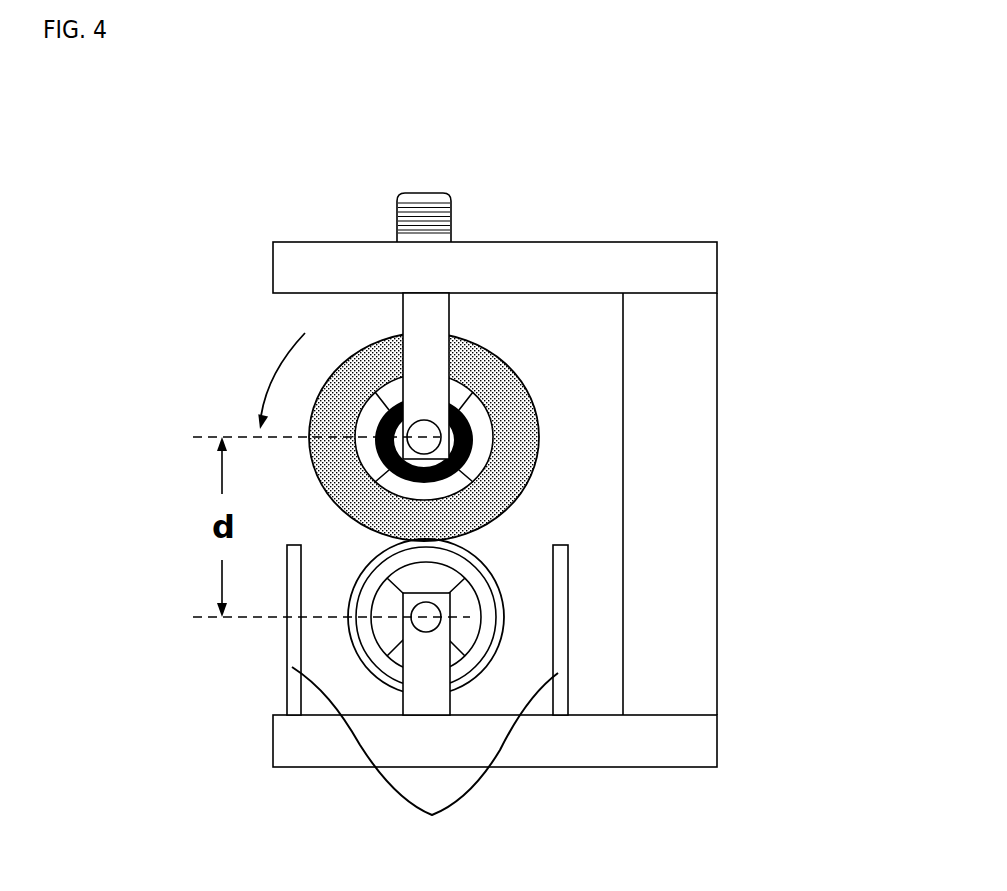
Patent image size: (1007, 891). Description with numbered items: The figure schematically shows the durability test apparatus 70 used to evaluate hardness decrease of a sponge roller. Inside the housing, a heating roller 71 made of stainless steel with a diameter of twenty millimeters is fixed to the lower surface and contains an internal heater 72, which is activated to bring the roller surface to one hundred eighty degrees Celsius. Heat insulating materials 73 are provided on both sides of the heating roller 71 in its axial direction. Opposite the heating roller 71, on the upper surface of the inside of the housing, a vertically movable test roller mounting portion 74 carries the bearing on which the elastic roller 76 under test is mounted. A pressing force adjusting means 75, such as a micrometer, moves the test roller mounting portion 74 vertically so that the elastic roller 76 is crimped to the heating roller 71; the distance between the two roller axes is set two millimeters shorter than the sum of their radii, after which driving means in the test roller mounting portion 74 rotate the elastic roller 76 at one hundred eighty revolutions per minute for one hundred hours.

The durability test apparatus 70 is at (502, 163).
The heating roller 71 is at (490, 566).
The internal heater 72 is at (467, 620).
The heat insulating materials 73 is at (425, 763).
The test roller mounting portion 74 is at (421, 353).
The pressing force adjusting means 75 is at (451, 221).
The elastic roller 76 is at (487, 363).